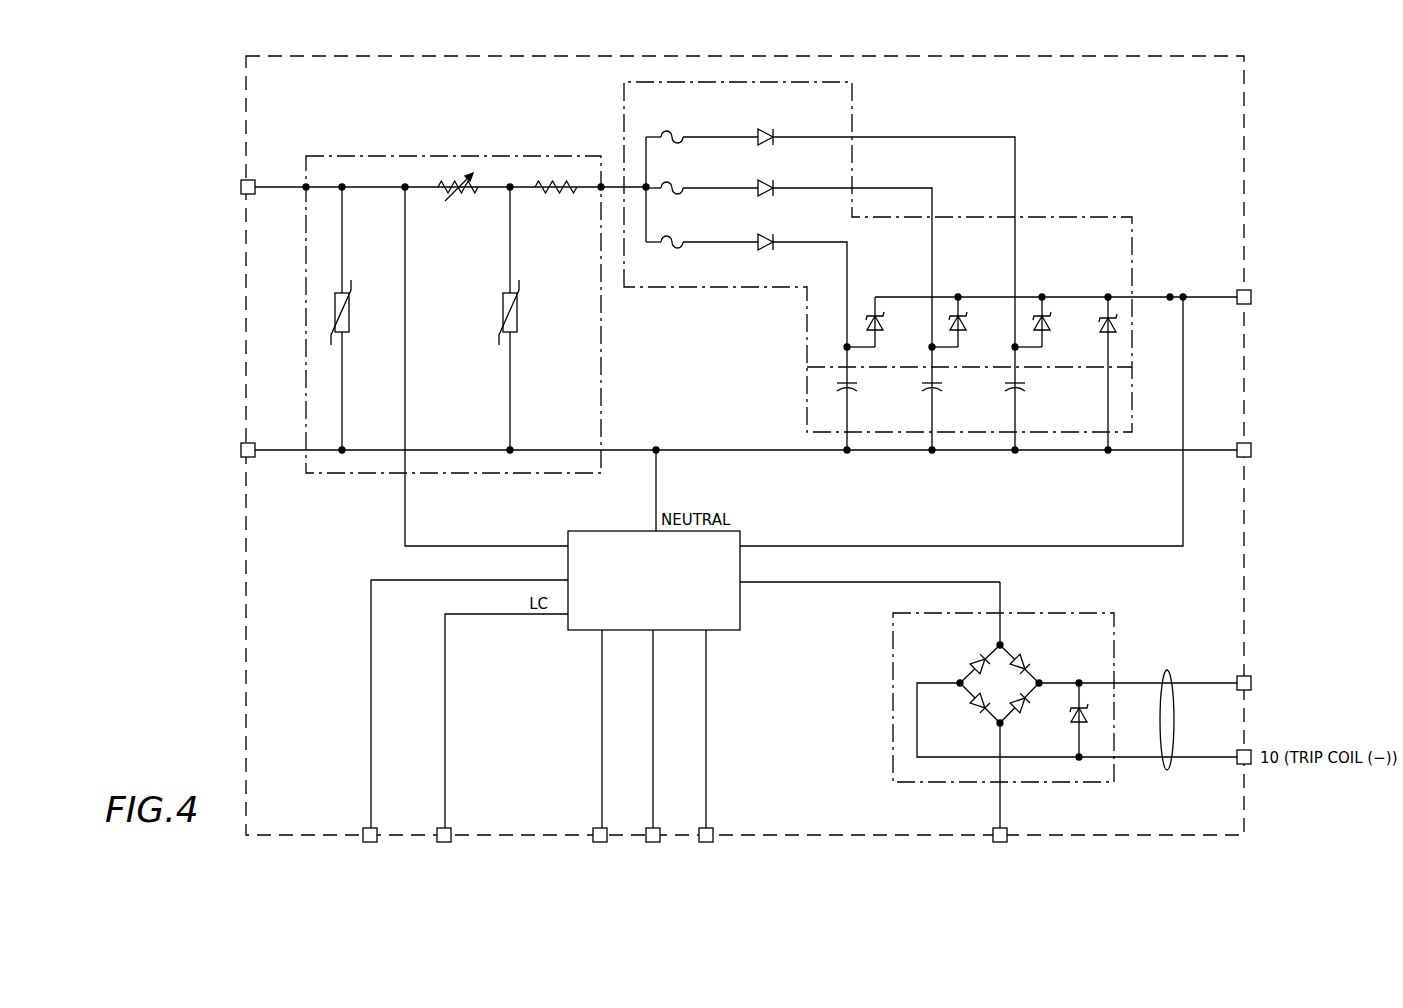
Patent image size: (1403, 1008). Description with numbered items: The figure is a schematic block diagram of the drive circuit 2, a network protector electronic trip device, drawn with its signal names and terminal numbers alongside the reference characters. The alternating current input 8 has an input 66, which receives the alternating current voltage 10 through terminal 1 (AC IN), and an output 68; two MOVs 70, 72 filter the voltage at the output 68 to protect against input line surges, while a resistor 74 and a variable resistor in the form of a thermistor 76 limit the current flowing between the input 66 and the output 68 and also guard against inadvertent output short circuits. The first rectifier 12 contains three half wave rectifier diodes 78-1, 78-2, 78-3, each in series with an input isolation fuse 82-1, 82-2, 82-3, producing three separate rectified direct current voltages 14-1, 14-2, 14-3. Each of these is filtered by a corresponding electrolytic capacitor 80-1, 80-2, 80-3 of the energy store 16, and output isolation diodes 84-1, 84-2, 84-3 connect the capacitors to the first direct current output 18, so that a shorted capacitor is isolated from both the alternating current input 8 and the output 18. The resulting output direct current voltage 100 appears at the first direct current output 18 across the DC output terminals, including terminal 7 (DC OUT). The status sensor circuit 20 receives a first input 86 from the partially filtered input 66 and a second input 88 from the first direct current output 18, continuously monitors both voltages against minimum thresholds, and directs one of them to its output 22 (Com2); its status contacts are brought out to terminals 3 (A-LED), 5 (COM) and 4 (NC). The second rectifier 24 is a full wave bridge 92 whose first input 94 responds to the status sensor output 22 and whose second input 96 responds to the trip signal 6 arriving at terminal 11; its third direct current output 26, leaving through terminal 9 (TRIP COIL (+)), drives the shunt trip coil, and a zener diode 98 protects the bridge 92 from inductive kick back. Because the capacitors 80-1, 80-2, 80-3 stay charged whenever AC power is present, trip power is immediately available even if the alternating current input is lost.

The drive circuit 2 is at (1163, 836).
The AC IN terminal 1 is at (212, 188).
The alternating current voltage 10 is at (277, 189).
The input 66 is at (306, 186).
The output 68 is at (601, 186).
The alternating current input 8 is at (416, 157).
The thermistor 76 is at (458, 197).
The resistor 74 is at (555, 193).
The MOV 70 is at (350, 318).
The MOV 72 is at (518, 318).
The first rectifier 12 is at (852, 103).
The energy store 16 is at (1132, 410).
The input isolation fuse 82-1 is at (675, 131).
The input isolation fuse 82-2 is at (675, 182).
The input isolation fuse 82-3 is at (675, 236).
The diode 78-1 is at (770, 129).
The diode 78-2 is at (770, 180).
The diode 78-3 is at (770, 234).
The rectified direct current voltage 14-1 is at (930, 137).
The rectified direct current voltage 14-2 is at (900, 188).
The rectified direct current voltage 14-3 is at (847, 250).
The first direct current output 18 is at (1170, 296).
The DC OUT terminal 7 is at (1291, 298).
The output isolation diode 84-1 is at (1047, 326).
The output isolation diode 84-2 is at (963, 326).
The output isolation diode 84-3 is at (880, 326).
The output direct current voltage 100 is at (1210, 299).
The capacitor 80-1 is at (1020, 392).
The capacitor 80-2 is at (937, 392).
The capacitor 80-3 is at (852, 392).
The status sensor circuit 20 is at (730, 630).
The second output 22 is at (741, 586).
The first input 86 is at (566, 540).
The second input 88 is at (745, 543).
The A-LED terminal 3 is at (455, 730).
The COM terminal 5 is at (587, 764).
The network protector shunt trip coil 4 is at (647, 764).
The trip signal 6 is at (1000, 808).
The second rectifier 24 is at (893, 690).
The full wave bridge 92 is at (999, 684).
The first input 94 is at (1002, 643).
The second input 96 is at (998, 725).
The zener diode 98 is at (1071, 724).
The third direct current output 26 is at (1167, 670).
The TRIP COIL (+) terminal 9 is at (1312, 684).
The A CONT terminal 11 is at (999, 863).